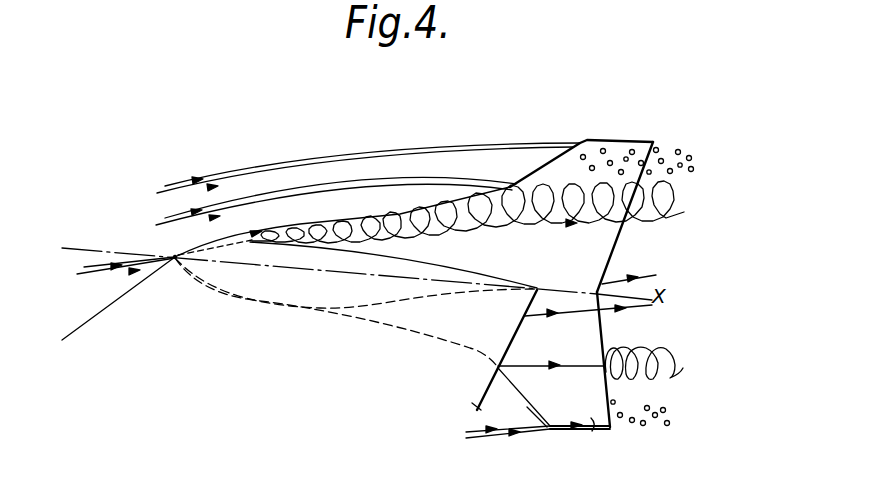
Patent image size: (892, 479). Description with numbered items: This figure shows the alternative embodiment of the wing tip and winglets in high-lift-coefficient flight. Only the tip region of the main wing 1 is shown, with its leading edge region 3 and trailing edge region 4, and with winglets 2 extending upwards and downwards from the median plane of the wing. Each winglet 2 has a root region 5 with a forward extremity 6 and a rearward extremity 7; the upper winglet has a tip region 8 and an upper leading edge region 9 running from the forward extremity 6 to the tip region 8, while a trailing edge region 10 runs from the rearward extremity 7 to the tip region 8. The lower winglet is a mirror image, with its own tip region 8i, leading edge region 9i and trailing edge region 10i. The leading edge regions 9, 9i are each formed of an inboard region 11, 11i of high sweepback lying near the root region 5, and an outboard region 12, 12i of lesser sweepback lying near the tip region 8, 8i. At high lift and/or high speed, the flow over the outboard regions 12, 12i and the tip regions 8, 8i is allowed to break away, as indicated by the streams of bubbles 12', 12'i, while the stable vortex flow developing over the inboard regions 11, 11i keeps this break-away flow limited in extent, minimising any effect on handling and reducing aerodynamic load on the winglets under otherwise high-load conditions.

The main wing 1 is at (150, 363).
The winglet 2 is at (557, 200).
The leading edge region 3 is at (118, 318).
The trailing edge region 4 is at (480, 410).
The root region 5 is at (411, 272).
The forward extremity 6 is at (175, 257).
The rearward extremity 7 is at (600, 291).
The upper tip region 8 is at (617, 150).
The upper leading edge region 9 is at (490, 168).
The trailing edge region 10 is at (620, 236).
The inboard region 11 is at (362, 218).
The outboard region 12 is at (366, 177).
The stream of bubbles 12' is at (697, 135).
The tip region of inverted winglet 8i is at (597, 432).
The leading edge region of inverted winglet 9i is at (470, 362).
The trailing edge region of inverted winglet 10i is at (603, 333).
The inboard region of inverted winglet 11i is at (403, 332).
The outboard region of inverted winglet 12i is at (527, 407).
The stream of bubbles 12'i is at (666, 435).